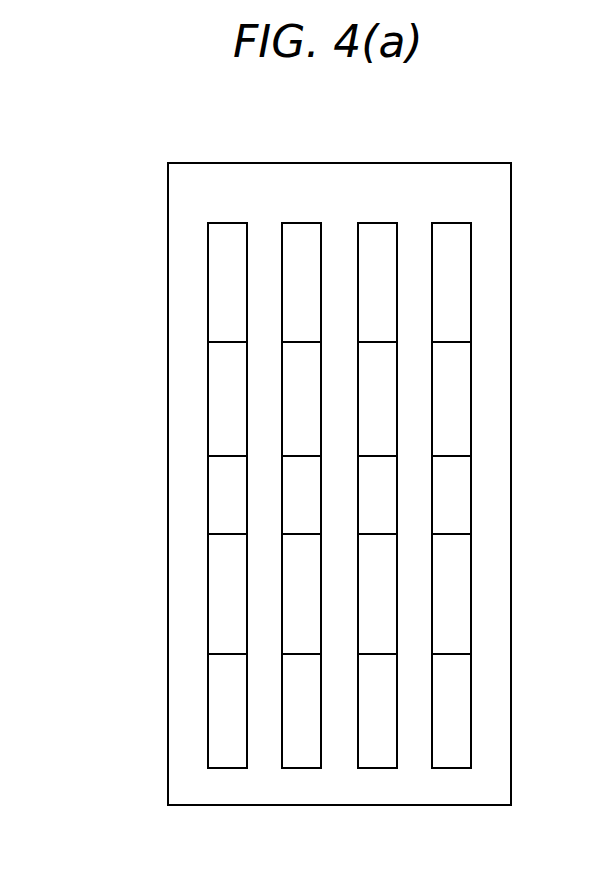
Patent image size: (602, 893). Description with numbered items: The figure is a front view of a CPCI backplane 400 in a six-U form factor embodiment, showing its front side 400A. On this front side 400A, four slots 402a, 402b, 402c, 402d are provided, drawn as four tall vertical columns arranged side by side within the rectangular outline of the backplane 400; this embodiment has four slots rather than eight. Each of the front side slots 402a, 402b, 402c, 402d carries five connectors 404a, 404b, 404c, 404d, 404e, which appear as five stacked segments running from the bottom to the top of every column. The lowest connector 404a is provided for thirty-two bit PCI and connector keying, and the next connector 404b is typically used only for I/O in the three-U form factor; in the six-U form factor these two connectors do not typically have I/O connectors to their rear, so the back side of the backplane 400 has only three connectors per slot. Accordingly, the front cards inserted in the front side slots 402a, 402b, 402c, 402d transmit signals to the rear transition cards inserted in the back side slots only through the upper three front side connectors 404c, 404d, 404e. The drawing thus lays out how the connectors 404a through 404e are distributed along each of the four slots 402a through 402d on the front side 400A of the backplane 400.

The backplane 400 is at (240, 163).
The front side 400A is at (360, 171).
The first front side slot 402a is at (228, 222).
The second front side slot 402b is at (299, 222).
The third front side slot 402c is at (378, 222).
The fourth front side slot 402d is at (451, 222).
The first front side connector 404a is at (210, 737).
The second front side connector 404b is at (210, 618).
The third front side connector 404c is at (290, 515).
The fourth front side connector 404d is at (211, 424).
The fifth front side connector 404e is at (212, 308).